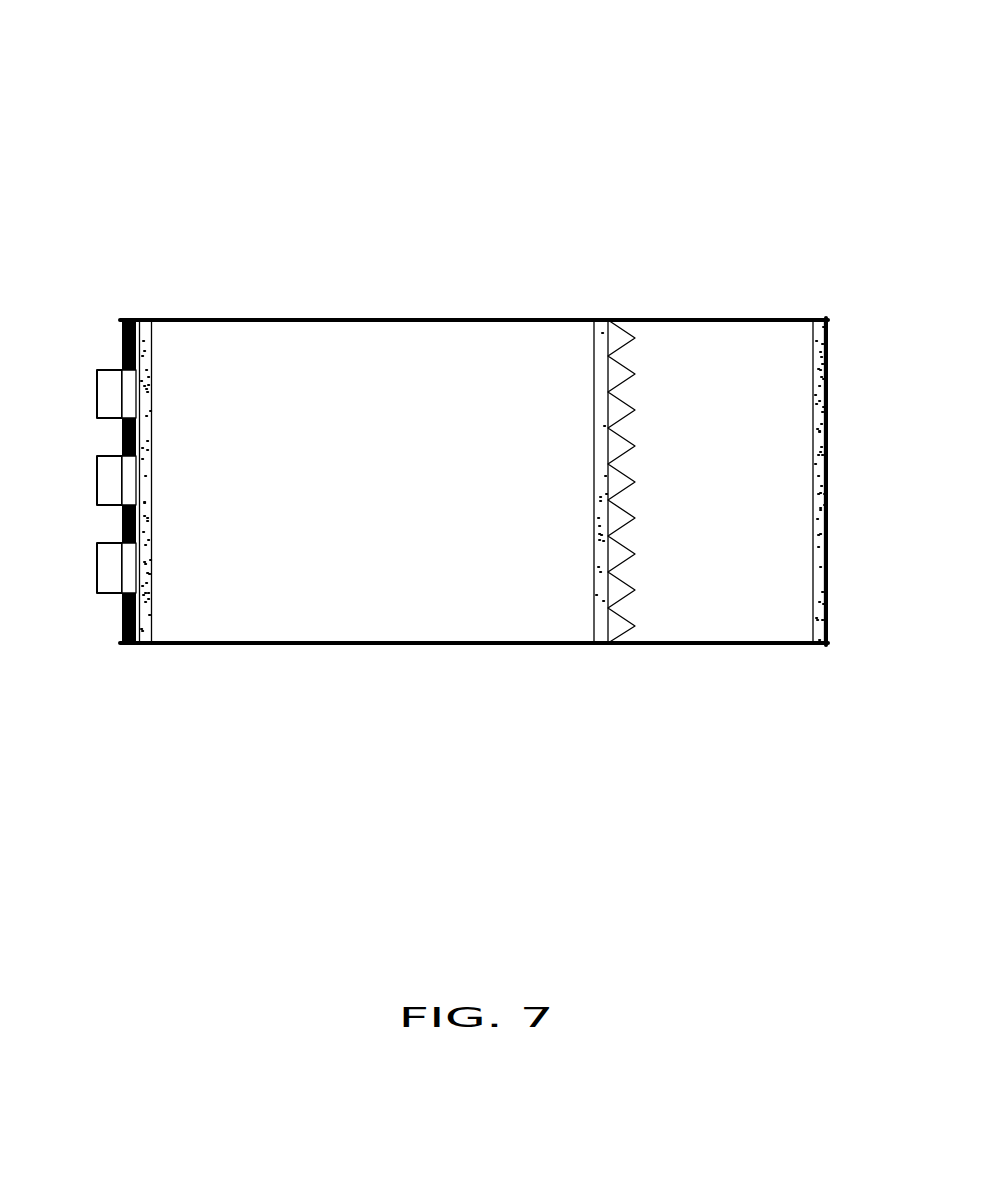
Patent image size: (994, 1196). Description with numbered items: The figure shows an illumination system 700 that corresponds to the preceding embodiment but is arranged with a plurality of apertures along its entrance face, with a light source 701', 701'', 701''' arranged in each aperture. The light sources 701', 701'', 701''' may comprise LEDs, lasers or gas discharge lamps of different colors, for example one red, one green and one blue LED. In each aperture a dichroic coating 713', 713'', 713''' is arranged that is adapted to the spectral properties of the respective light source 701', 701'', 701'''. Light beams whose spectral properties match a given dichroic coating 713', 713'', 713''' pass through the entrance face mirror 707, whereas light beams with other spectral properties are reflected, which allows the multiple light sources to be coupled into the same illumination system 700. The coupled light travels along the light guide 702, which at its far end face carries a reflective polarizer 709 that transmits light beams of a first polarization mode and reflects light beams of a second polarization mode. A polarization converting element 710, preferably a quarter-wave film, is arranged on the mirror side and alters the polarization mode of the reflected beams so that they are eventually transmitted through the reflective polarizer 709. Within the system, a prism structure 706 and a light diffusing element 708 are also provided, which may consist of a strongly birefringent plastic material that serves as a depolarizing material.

The illumination system 700 is at (263, 153).
The light source 701' is at (78, 313).
The light source 701'' is at (73, 532).
The light source 701''' is at (87, 656).
The light guide 702 is at (638, 643).
The prism structure 706 is at (620, 407).
The entrance face mirror 707 is at (125, 645).
The light diffusing element 708 is at (604, 636).
The reflective polarizer 709 is at (813, 421).
The polarization converting element 710 is at (151, 365).
The dichroic coating 713' is at (267, 552).
The dichroic coating 713'' is at (247, 637).
The dichroic coating 713''' is at (233, 724).